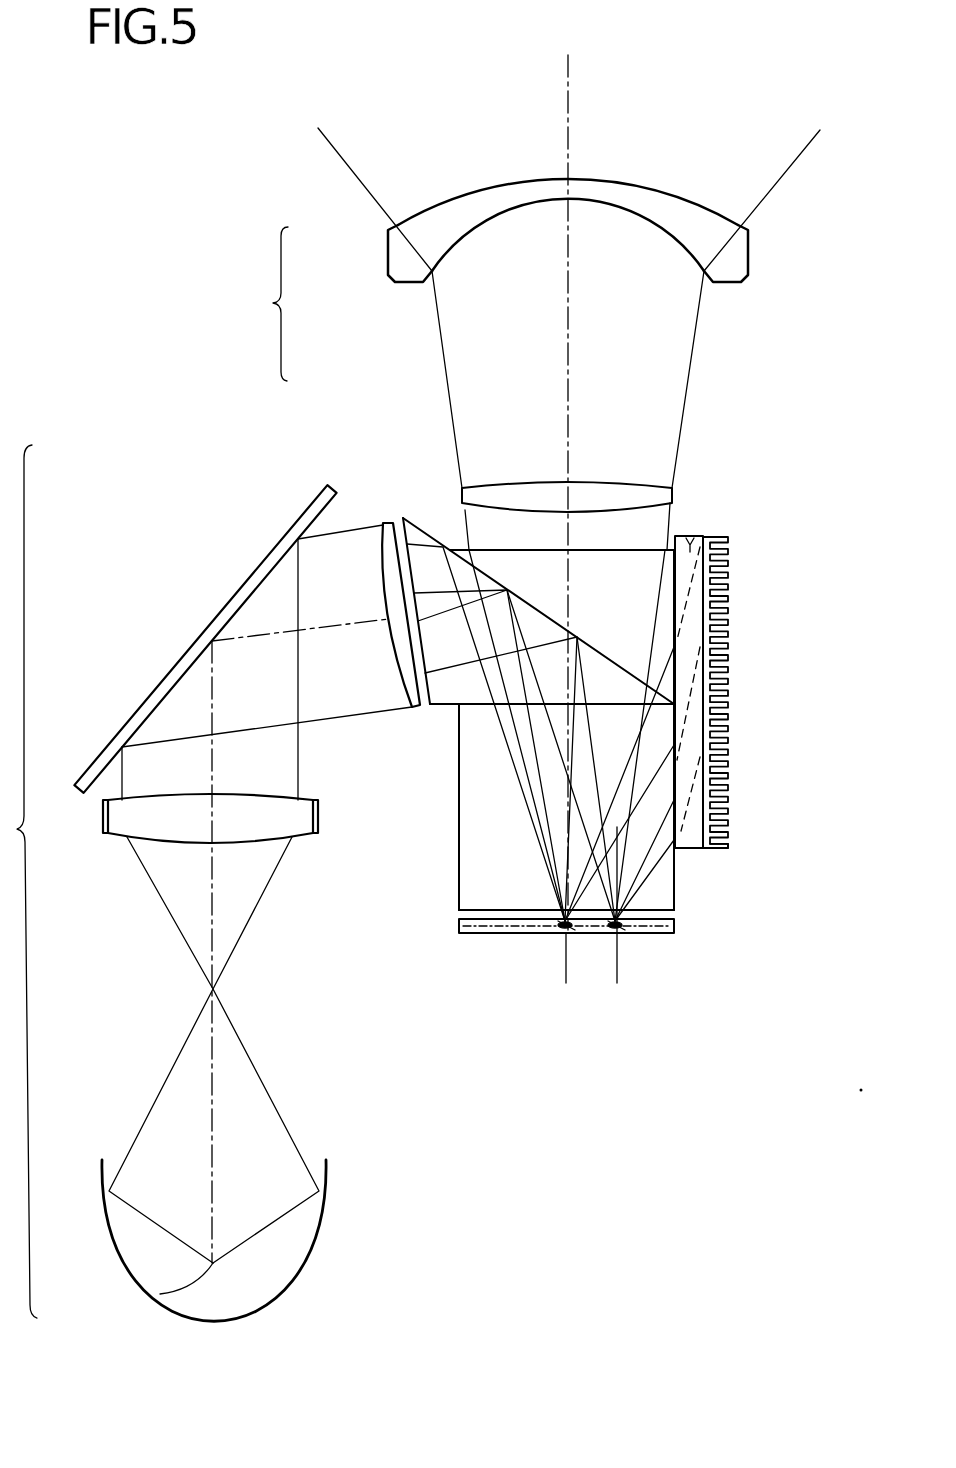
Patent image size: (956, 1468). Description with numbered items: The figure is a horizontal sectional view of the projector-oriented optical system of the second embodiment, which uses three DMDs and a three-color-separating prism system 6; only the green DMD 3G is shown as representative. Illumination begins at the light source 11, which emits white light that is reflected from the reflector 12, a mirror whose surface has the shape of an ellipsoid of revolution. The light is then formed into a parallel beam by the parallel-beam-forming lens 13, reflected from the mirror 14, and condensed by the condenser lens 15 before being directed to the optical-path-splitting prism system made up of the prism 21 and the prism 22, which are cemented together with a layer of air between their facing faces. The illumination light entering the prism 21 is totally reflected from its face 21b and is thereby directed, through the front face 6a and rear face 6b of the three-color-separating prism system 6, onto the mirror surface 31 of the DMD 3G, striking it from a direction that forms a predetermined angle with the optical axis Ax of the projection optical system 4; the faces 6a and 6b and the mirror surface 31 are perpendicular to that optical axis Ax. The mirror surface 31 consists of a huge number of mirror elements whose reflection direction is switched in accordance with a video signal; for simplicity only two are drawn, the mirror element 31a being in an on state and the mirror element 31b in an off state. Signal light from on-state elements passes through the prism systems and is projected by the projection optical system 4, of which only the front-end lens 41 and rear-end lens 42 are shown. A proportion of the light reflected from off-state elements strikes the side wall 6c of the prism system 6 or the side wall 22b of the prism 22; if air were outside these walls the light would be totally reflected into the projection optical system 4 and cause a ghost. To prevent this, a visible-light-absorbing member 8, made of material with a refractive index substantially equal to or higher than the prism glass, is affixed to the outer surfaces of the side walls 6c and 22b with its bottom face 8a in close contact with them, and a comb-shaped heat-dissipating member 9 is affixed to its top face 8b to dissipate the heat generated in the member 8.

The optical axis Ax is at (573, 90).
The projection optical system 4 is at (268, 304).
The front-end lens 41 is at (385, 257).
The rear-end lens 42 is at (463, 495).
The prism 21 is at (441, 714).
The face 21b is at (422, 527).
The prism 22 is at (633, 563).
The side wall 22b is at (675, 577).
The visible-light-absorbing member 8 is at (693, 537).
The bottom face 8a is at (678, 828).
The top face 8b is at (712, 838).
The comb-shaped heat-dissipating member 9 is at (730, 640).
The three-color-separating prism system 6 is at (483, 800).
The front face 6a is at (483, 703).
The rear face 6b is at (480, 908).
The side wall 6c is at (676, 884).
The mirror surface 31 is at (459, 928).
The mirror element 31a is at (560, 933).
The mirror element 31b is at (610, 933).
The DMD 3G is at (502, 933).
The condenser lens 15 is at (388, 523).
The mirror 14 is at (105, 745).
The parallel-beam-forming lens 13 is at (102, 812).
The reflector 12 is at (118, 1235).
The light source 11 is at (160, 1294).